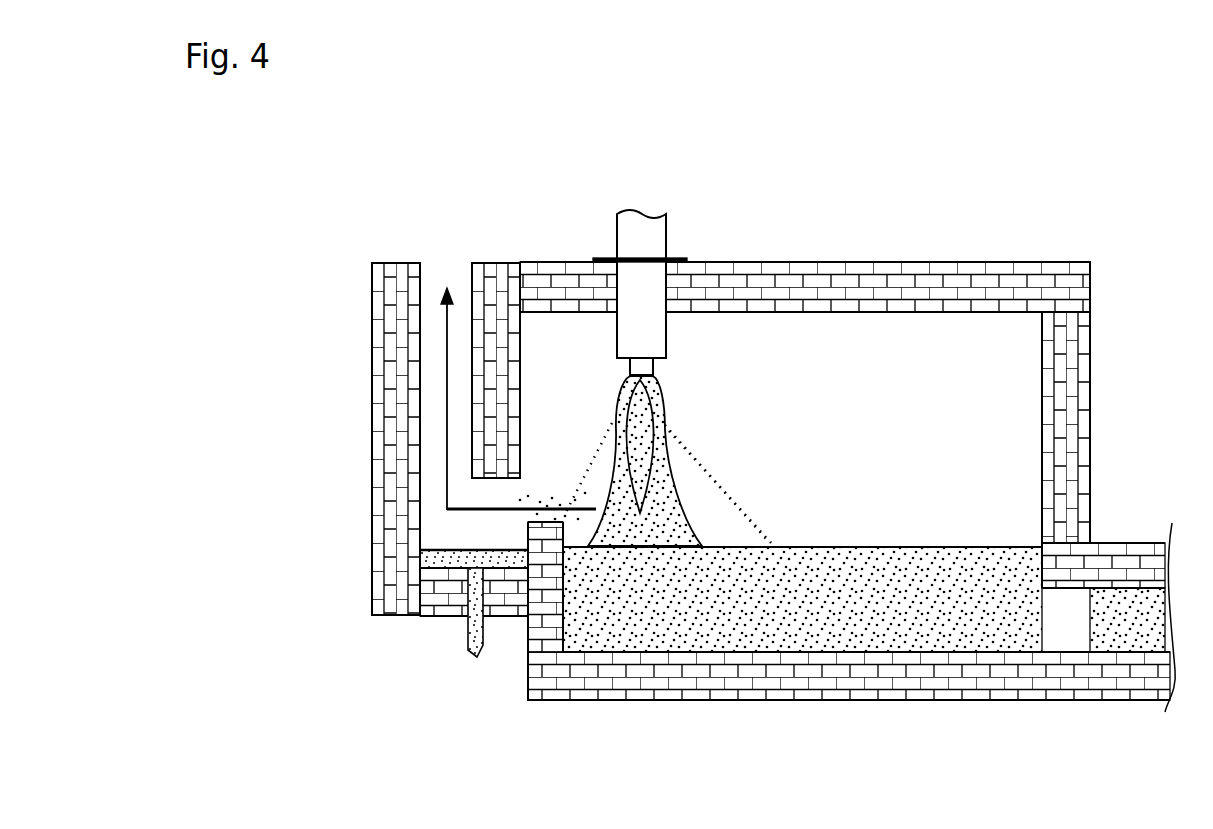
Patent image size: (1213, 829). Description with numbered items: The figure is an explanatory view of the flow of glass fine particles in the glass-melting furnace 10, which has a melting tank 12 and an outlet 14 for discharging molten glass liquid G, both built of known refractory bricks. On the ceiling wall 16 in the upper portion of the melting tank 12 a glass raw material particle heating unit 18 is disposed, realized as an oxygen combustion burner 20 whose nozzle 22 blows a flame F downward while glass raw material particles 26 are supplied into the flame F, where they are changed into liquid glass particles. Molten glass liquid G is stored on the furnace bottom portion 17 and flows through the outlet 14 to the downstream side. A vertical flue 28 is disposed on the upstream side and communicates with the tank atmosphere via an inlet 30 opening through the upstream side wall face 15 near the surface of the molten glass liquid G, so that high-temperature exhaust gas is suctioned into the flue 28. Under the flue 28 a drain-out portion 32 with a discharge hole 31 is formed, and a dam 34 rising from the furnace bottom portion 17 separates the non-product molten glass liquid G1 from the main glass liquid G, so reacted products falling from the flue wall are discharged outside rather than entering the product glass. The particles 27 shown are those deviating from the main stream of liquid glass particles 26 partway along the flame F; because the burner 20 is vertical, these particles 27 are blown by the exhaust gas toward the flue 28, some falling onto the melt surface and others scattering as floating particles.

The glass-melting furnace 10 is at (1018, 229).
The melting tank 12 is at (1091, 285).
The outlet 14 is at (1112, 544).
The upstream side wall face 15 is at (513, 370).
The ceiling wall 16 is at (862, 265).
The furnace bottom portion 17 is at (692, 685).
The glass raw material particle heating unit 18 is at (640, 273).
The oxygen combustion burner 20 is at (622, 228).
The nozzle 22 is at (655, 372).
The glass raw material particles 26 is at (655, 432).
The particles deviated from the main stream 27 is at (570, 502).
The flue 28 is at (432, 330).
The inlet 30 is at (530, 500).
The discharge hole 31 is at (468, 588).
The drain-out portion 32 is at (473, 544).
The dam 34 is at (545, 528).
The flame F is at (662, 412).
The molten glass liquid G is at (762, 636).
The non-product molten glass liquid G1 is at (437, 550).